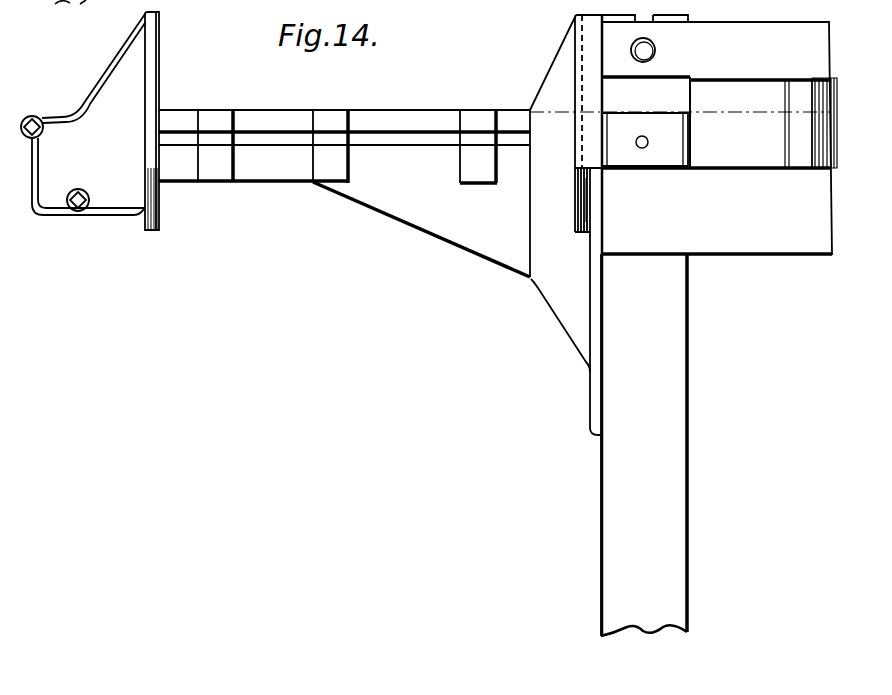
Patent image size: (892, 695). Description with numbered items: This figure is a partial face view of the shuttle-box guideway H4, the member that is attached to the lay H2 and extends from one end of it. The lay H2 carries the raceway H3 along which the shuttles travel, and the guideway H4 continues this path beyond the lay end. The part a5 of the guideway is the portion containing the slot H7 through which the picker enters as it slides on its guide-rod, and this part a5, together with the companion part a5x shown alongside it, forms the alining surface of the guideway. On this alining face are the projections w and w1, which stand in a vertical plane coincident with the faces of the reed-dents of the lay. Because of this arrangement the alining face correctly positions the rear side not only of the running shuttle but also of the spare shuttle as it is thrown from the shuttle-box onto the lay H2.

The shuttle-box guideway H4 is at (558, 64).
The slot H7 is at (280, 141).
The part of the shuttle-box guideway a5 is at (411, 114).
The part of the shuttle-box guideway a5x is at (410, 148).
The projection w is at (213, 113).
The projection w1 is at (480, 187).
The raceway H3 is at (788, 250).
The lay H2 is at (680, 331).